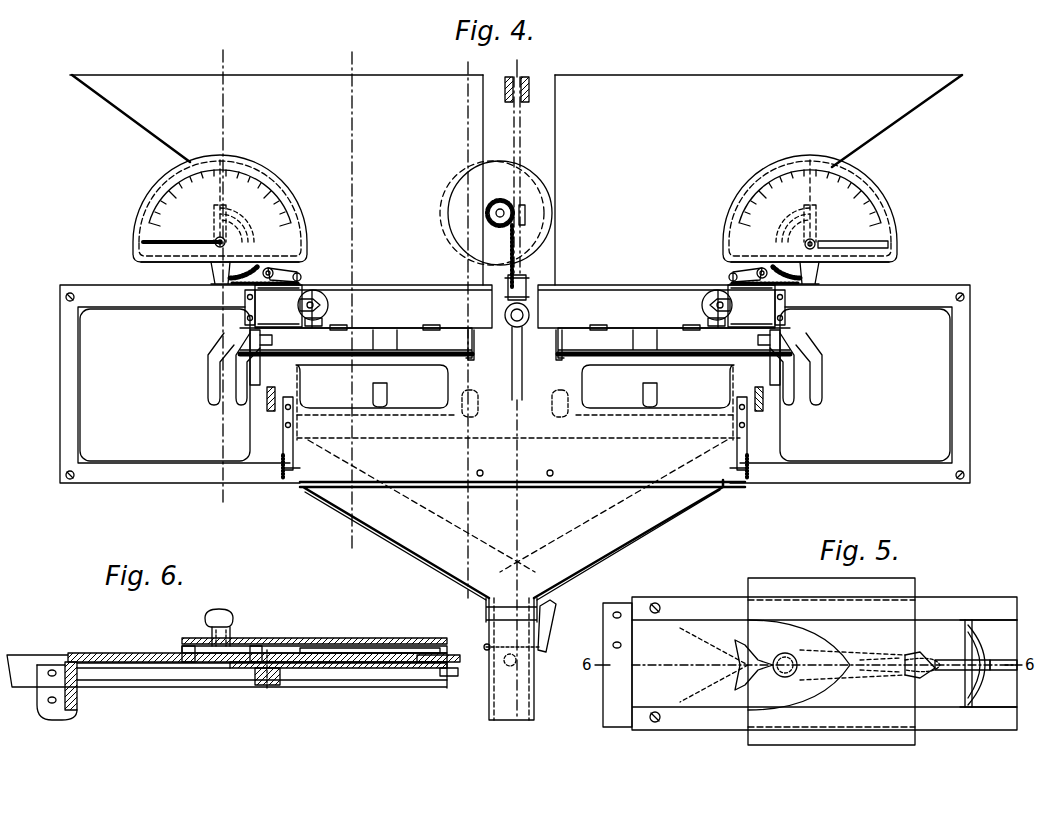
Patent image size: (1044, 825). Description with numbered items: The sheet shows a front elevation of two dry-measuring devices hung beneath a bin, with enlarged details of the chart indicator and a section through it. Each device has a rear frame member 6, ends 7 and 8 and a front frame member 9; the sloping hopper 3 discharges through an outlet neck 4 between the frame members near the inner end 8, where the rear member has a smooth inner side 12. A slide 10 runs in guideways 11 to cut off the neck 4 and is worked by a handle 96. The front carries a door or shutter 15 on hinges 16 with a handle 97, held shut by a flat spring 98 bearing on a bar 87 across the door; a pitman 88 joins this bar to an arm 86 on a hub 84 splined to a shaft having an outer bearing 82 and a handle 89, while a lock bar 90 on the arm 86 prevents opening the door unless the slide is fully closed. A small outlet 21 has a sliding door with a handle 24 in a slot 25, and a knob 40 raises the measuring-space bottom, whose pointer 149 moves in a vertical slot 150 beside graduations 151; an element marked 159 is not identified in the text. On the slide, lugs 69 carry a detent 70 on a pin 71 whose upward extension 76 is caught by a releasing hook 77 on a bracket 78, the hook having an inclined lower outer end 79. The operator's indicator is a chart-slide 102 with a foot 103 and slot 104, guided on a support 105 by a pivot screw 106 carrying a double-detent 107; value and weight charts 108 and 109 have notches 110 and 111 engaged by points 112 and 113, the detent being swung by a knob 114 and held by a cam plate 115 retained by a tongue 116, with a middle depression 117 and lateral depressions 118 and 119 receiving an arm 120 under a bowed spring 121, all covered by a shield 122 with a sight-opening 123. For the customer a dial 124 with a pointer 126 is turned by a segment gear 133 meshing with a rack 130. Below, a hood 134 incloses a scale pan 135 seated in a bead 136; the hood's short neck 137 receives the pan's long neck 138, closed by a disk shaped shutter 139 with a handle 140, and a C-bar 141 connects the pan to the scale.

In FIG. 4, the hopper 3 is at (130, 125).
In FIG. 4, the outlet neck 4 is at (395, 285).
In FIG. 4, the rear frame member 6 is at (82, 462).
In FIG. 4, the end 7 is at (75, 390).
In FIG. 4, the inner end 8 is at (482, 478).
In FIG. 4, the front frame member 9 is at (857, 495).
In FIG. 4, the slide 10 is at (497, 383).
In FIG. 4, the longitudinal guideways 11 is at (102, 285).
In FIG. 4, the smooth inner side 12 is at (349, 299).
In FIG. 4, the door 15 is at (412, 410).
In FIG. 4, the hinges 16 is at (345, 328).
In FIG. 4, the small outlet 21 is at (468, 418).
In FIG. 4, the handle 24 is at (468, 362).
In FIG. 4, the slot 25 is at (462, 342).
In FIG. 4, the knob 40 is at (265, 408).
In FIG. 4, the lugs 69 is at (297, 277).
In FIG. 4, the detent 70 is at (276, 277).
In FIG. 4, the pin 71 is at (300, 272).
In FIG. 4, the upward extension 76 is at (268, 273).
In FIG. 4, the releasing hook 77 is at (264, 270).
In FIG. 4, the bracket 78 is at (292, 280).
In FIG. 4, the inclined lower outer end 79 is at (250, 283).
In FIG. 4, the outer bearing 82 is at (232, 348).
In FIG. 4, the hub 84 is at (262, 370).
In FIG. 4, the arm 86 is at (262, 380).
In FIG. 4, the bar 87 is at (353, 357).
In FIG. 4, the pitman 88 is at (262, 400).
In FIG. 4, the handle 89 is at (206, 370).
In FIG. 4, the lock bar 90 is at (240, 400).
In FIG. 4, the handle 96 is at (249, 372).
In FIG. 4, the handle 97 is at (380, 407).
In FIG. 4, the flat spring 98 is at (386, 335).
In FIG. 4, the chart-slide 102 is at (305, 288).
In FIG. 5, the chart-slide 102 is at (680, 720).
In FIG. 6, the chart-slide 102 is at (132, 665).
In FIG. 4, the foot 103 is at (245, 312).
In FIG. 5, the foot 103 is at (612, 672).
In FIG. 6, the foot 103 is at (60, 712).
In FIG. 5, the slot 104 is at (1000, 672).
In FIG. 6, the slot 104 is at (340, 682).
In FIG. 6, the support 105 is at (385, 688).
In FIG. 4, the pivot screw 106 is at (325, 296).
In FIG. 5, the pivot screw 106 is at (800, 670).
In FIG. 6, the pivot screw 106 is at (270, 690).
In FIG. 4, the double-detent 107 is at (315, 326).
In FIG. 5, the double-detent 107 is at (750, 625).
In FIG. 6, the double-detent 107 is at (200, 664).
In FIG. 4, the value chart 108 is at (262, 287).
In FIG. 5, the value chart 108 is at (680, 603).
In FIG. 6, the value chart 108 is at (128, 655).
In FIG. 4, the weight chart 109 is at (280, 325).
In FIG. 5, the weight chart 109 is at (742, 730).
In FIG. 5, the notches 110 is at (930, 617).
In FIG. 5, the notches 111 is at (740, 672).
In FIG. 5, the point 112 is at (740, 648).
In FIG. 5, the point 113 is at (745, 683).
In FIG. 5, the knob 114 is at (783, 678).
In FIG. 6, the knob 114 is at (234, 615).
In FIG. 5, the cam plate 115 is at (968, 700).
In FIG. 6, the cam plate 115 is at (375, 648).
In FIG. 5, the tongue 116 is at (955, 660).
In FIG. 6, the tongue 116 is at (440, 655).
In FIG. 5, the middle depression 117 is at (910, 670).
In FIG. 6, the middle depression 117 is at (352, 646).
In FIG. 5, the lateral depression 118 is at (915, 690).
In FIG. 5, the lateral depression 119 is at (985, 622).
In FIG. 5, the arm 120 is at (905, 655).
In FIG. 6, the arm 120 is at (330, 638).
In FIG. 5, the bowed spring 121 is at (965, 684).
In FIG. 6, the bowed spring 121 is at (435, 688).
In FIG. 5, the shield 122 is at (800, 590).
In FIG. 6, the shield 122 is at (300, 680).
In FIG. 5, the sight-opening 123 is at (792, 655).
In FIG. 6, the sight-opening 123 is at (232, 664).
In FIG. 4, the dial 124 is at (160, 198).
In FIG. 4, the pointer 126 is at (170, 242).
In FIG. 4, the rack 130 is at (211, 272).
In FIG. 4, the segment gear 133 is at (198, 291).
In FIG. 4, the hood 134 is at (330, 497).
In FIG. 4, the scale pan 135 is at (410, 497).
In FIG. 4, the bead 136 is at (705, 497).
In FIG. 4, the short neck 137 is at (540, 597).
In FIG. 4, the long neck 138 is at (520, 683).
In FIG. 4, the shutter 139 is at (518, 650).
In FIG. 4, the handle 140 is at (552, 625).
In FIG. 4, the C-bar 141 is at (570, 527).
In FIG. 4, the pointer 149 is at (295, 468).
In FIG. 4, the vertical slot 150 is at (282, 436).
In FIG. 4, the graduations 151 is at (282, 455).
In FIG. 4, the plate screw 159 is at (742, 445).